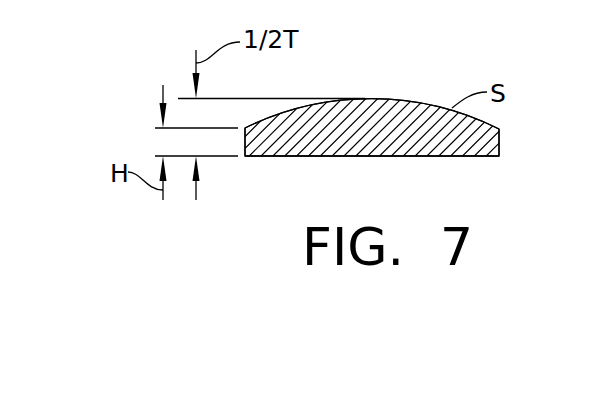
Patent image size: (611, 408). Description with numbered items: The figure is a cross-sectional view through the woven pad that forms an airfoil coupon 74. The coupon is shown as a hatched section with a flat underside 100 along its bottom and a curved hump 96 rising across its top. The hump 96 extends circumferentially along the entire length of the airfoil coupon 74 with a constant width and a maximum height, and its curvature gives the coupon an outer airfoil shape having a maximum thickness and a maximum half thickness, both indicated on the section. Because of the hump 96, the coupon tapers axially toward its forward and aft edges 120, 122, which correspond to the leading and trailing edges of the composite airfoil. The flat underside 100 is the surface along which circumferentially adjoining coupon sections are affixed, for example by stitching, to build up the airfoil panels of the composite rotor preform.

The airfoil coupon 74 is at (418, 157).
The hump 96 is at (373, 99).
The underside 100 is at (355, 157).
The aft edge 122 is at (245, 128).
The forward edge 120 is at (500, 129).